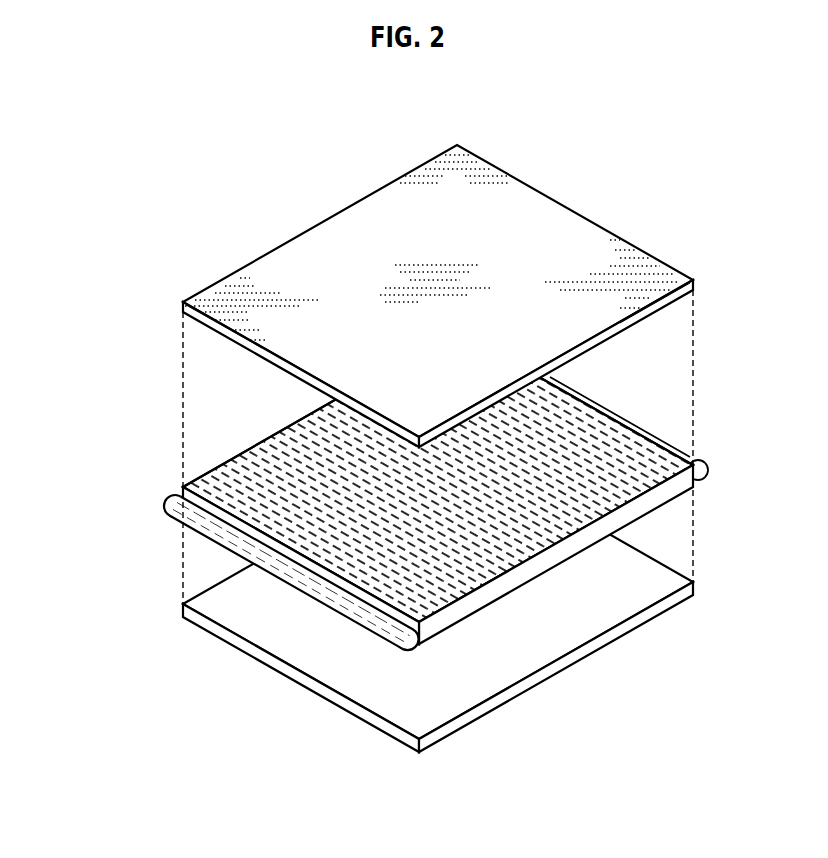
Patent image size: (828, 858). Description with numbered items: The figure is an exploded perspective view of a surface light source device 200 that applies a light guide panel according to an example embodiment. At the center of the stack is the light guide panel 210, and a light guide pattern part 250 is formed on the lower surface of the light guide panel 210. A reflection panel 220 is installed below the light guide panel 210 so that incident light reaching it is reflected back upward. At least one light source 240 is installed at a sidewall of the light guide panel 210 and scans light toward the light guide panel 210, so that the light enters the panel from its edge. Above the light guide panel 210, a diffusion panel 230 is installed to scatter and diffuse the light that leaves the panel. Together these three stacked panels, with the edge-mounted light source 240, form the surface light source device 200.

The surface light source device 200 is at (399, 425).
The light guide panel 210 is at (424, 487).
The reflection panel 220 is at (182, 616).
The diffusion panel 230 is at (182, 308).
The light source 240 is at (232, 540).
The light guide pattern part 250 is at (237, 460).